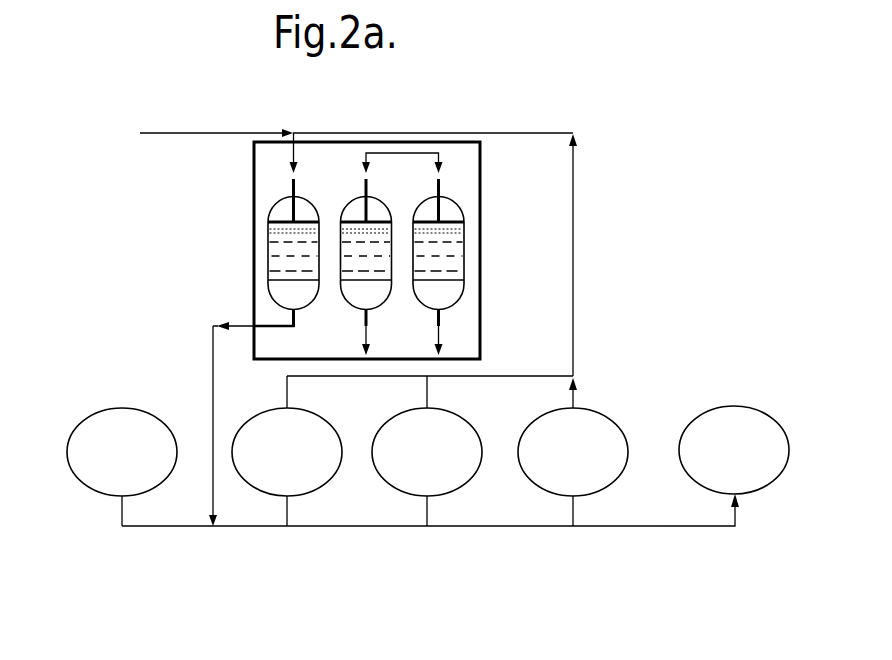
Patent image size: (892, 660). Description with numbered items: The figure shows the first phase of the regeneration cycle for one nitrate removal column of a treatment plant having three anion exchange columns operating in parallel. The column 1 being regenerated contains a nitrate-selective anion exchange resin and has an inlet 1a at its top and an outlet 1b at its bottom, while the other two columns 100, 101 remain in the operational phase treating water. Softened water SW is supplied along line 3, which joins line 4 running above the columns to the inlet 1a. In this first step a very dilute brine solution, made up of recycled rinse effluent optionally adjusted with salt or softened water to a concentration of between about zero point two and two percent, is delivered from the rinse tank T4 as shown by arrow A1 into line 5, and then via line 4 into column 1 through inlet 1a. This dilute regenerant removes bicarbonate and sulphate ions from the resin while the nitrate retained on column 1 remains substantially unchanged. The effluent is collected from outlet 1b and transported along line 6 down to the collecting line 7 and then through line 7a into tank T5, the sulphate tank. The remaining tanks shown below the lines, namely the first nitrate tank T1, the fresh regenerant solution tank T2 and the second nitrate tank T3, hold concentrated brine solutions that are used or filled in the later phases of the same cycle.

The anion exchange column 1 is at (268, 247).
The inlet 1a is at (272, 198).
The outlet 1b is at (266, 318).
The line 3 is at (190, 133).
The line 4 is at (400, 131).
The line 5 is at (574, 270).
The line 6 is at (213, 383).
The line 7 is at (244, 527).
The line 7a is at (660, 527).
The column 100 is at (353, 199).
The column 101 is at (453, 199).
The arrow A1 is at (578, 379).
The softened water SW is at (120, 134).
The first nitrate tank T1 is at (122, 467).
The fresh regenerant solution tank T2 is at (287, 451).
The second nitrate tank T3 is at (427, 451).
The rinse tank T4 is at (573, 467).
The sulphate tank T5 is at (734, 450).